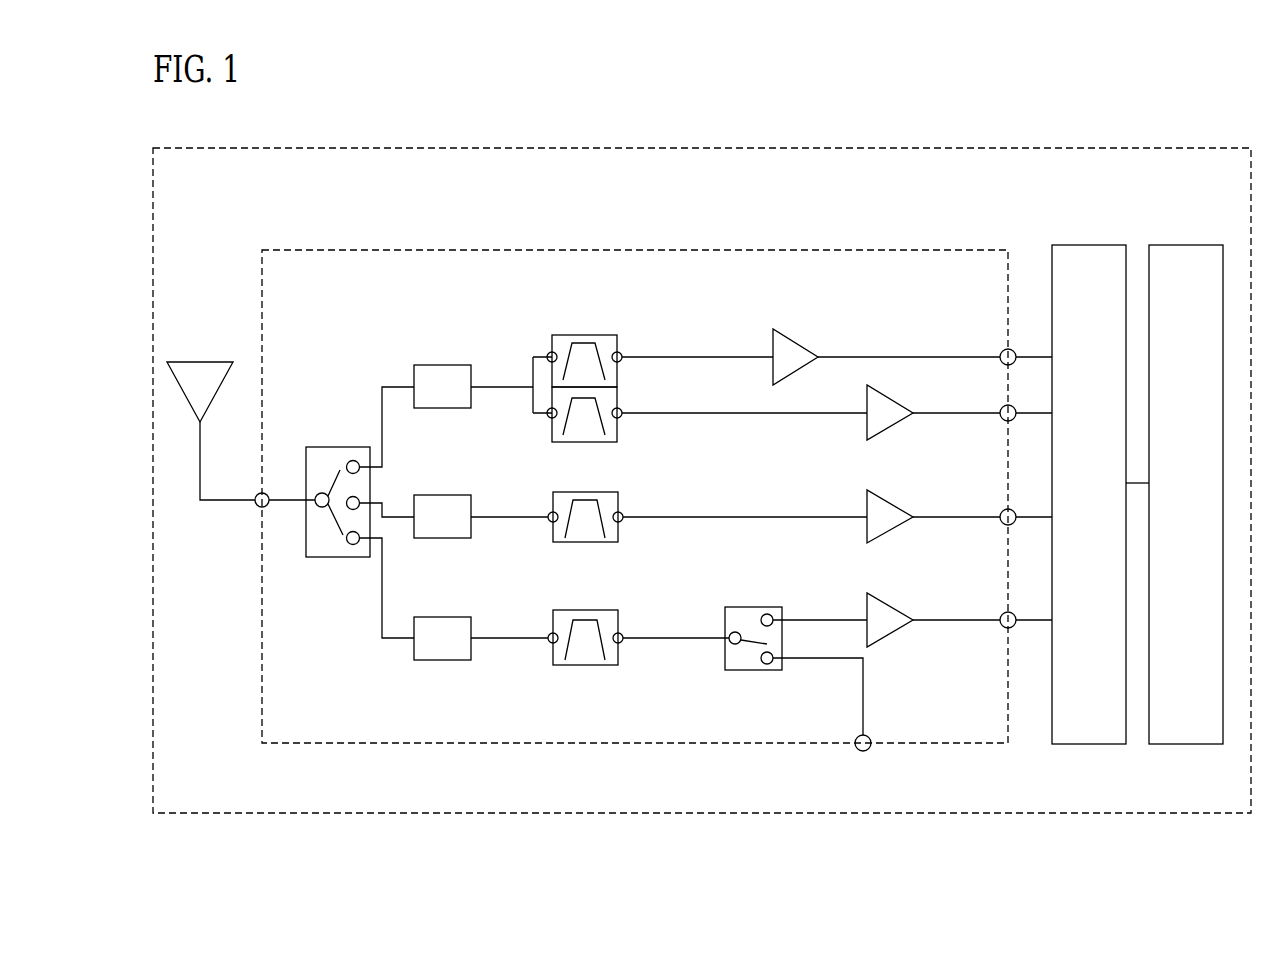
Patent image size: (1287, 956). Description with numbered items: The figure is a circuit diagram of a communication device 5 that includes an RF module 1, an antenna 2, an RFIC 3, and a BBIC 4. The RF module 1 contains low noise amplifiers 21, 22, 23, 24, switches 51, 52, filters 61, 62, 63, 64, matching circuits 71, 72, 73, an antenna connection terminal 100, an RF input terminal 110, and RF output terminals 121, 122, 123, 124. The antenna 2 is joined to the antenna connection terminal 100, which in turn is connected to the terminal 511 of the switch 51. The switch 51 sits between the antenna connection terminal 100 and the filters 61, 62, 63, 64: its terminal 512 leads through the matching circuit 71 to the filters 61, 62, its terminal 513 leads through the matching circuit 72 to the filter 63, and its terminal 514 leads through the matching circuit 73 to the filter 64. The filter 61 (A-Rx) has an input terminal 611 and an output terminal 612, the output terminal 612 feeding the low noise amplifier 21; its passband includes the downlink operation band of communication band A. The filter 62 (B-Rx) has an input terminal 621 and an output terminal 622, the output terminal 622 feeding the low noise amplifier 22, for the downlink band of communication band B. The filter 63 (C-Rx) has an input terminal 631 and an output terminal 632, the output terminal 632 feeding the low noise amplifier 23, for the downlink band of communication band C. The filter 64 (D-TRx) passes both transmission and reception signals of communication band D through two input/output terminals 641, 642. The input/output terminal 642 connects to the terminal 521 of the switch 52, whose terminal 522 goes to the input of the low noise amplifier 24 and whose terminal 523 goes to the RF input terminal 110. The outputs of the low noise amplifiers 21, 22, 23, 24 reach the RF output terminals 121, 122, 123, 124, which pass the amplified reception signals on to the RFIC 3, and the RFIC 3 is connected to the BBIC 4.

The RF module 1 is at (960, 250).
The antenna 2 is at (200, 362).
The RFIC 3 is at (1088, 245).
The BBIC 4 is at (1185, 245).
The communication device 5 is at (1213, 148).
The low noise amplifier 21 is at (788, 340).
The low noise amplifier 22 is at (893, 402).
The low noise amplifier 23 is at (893, 504).
The low noise amplifier 24 is at (893, 607).
The switch 51 is at (345, 503).
The terminal 511 is at (316, 504).
The terminal 512 is at (355, 460).
The terminal 513 is at (360, 502).
The terminal 514 is at (353, 545).
The switch 52 is at (773, 647).
The terminal 521 is at (730, 632).
The terminal 522 is at (772, 615).
The terminal 523 is at (770, 663).
The filter 61 is at (589, 347).
The filter 62 is at (590, 430).
The filter 63 is at (589, 527).
The filter 64 is at (589, 648).
The input terminal 611 is at (548, 352).
The output terminal 612 is at (622, 360).
The input terminal 621 is at (548, 418).
The output terminal 622 is at (622, 410).
The input terminal 631 is at (548, 521).
The output terminal 632 is at (623, 520).
The input/output terminal 641 is at (548, 642).
The input/output terminal 642 is at (623, 641).
The matching circuit 71 is at (428, 365).
The matching circuit 72 is at (428, 495).
The matching circuit 73 is at (428, 617).
The antenna connection terminal 100 is at (258, 507).
The RF input terminal 110 is at (870, 750).
The RF output terminal 121 is at (1002, 352).
The RF output terminal 122 is at (1002, 408).
The RF output terminal 123 is at (1002, 512).
The RF output terminal 124 is at (1002, 615).